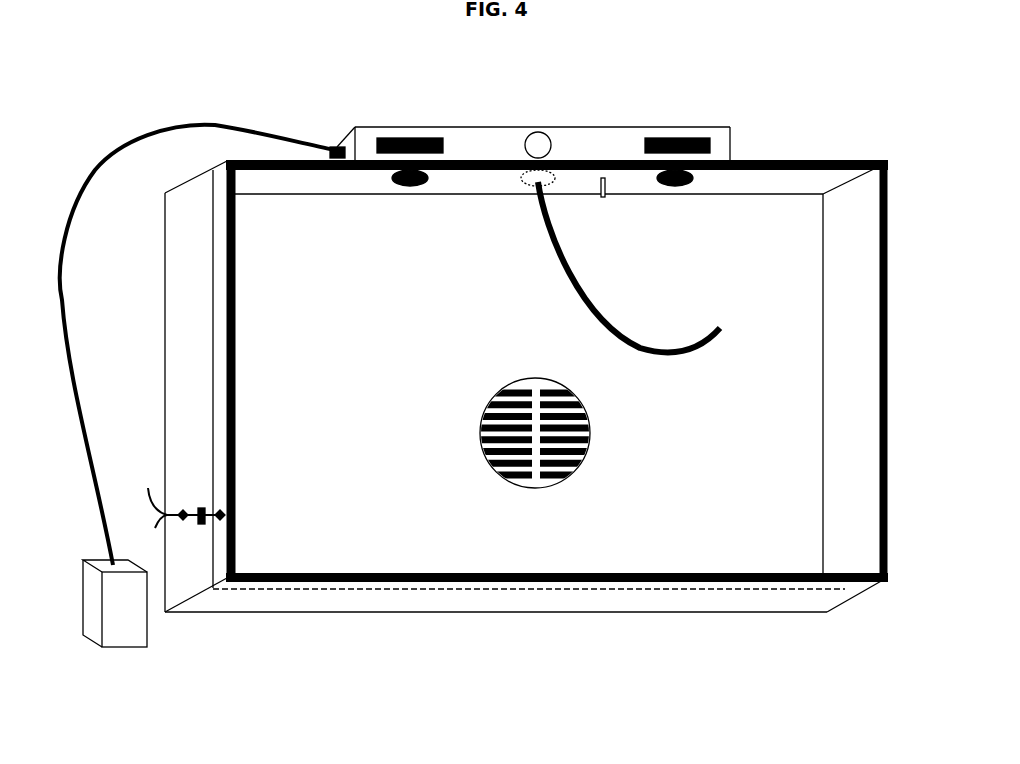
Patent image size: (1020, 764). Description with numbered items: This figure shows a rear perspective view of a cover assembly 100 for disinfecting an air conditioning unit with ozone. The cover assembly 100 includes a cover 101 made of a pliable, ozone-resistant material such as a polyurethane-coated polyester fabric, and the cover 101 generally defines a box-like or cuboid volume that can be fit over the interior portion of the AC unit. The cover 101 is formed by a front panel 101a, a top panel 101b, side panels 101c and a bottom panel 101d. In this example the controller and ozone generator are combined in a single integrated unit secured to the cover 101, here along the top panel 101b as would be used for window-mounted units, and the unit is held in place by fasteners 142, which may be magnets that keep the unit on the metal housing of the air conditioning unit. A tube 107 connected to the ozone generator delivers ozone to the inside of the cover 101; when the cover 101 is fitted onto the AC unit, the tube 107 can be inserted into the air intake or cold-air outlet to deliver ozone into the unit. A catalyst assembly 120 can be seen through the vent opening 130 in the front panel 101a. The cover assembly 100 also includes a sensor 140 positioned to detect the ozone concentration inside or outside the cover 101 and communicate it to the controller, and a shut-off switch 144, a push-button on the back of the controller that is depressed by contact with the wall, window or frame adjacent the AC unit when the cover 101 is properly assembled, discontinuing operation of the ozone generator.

The cover assembly 100 is at (144, 119).
The cover 101 is at (165, 289).
The front panel 101a is at (557, 371).
The top panel 101b is at (802, 158).
The side panels 101c is at (173, 413).
The bottom panel 101d is at (697, 597).
The tube 107 is at (643, 340).
The catalyst assembly 120 is at (538, 467).
The vent opening 130 is at (588, 427).
The sensor 140 is at (604, 191).
The fasteners 142 is at (413, 182).
The shut-off switch 144 is at (539, 138).